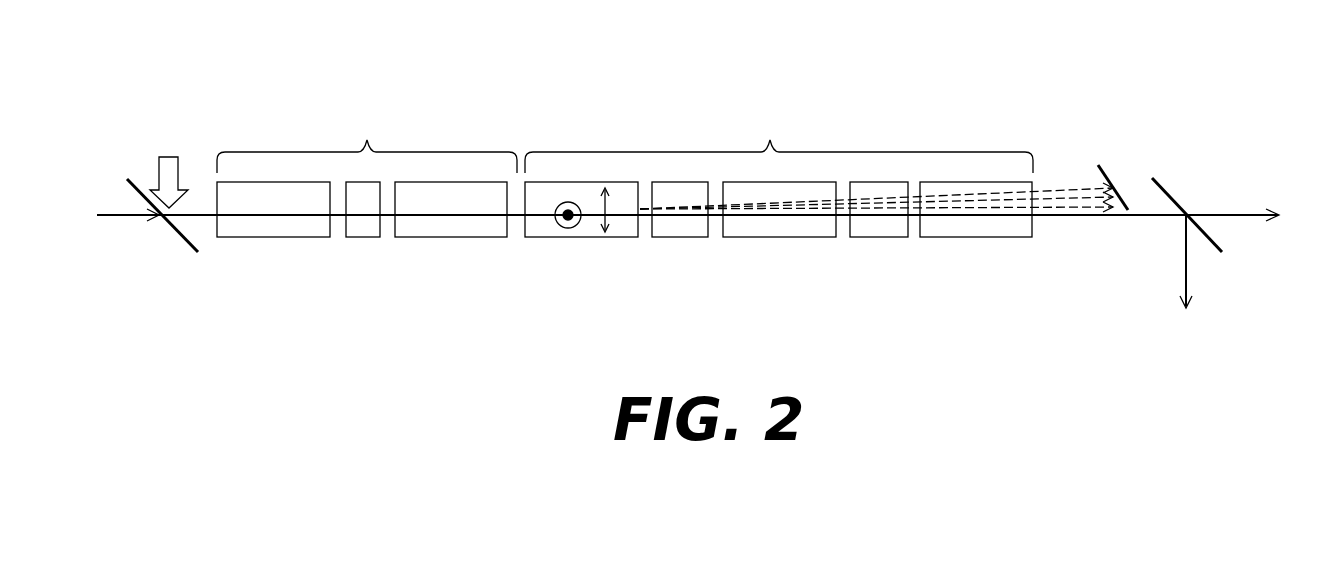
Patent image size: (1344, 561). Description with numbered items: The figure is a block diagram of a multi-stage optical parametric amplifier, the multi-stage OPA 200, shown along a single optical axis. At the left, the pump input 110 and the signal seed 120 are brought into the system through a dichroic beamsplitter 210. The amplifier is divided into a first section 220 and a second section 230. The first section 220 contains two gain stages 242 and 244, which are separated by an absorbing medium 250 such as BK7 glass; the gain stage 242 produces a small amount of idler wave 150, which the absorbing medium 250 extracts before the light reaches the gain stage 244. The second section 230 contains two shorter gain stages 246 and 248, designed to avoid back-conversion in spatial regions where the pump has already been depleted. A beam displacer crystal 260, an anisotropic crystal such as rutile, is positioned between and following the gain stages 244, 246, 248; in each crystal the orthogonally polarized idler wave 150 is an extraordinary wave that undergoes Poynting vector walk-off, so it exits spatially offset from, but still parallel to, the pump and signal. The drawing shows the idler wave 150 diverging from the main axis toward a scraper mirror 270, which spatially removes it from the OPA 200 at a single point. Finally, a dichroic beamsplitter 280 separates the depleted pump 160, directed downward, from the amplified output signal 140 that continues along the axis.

The multi-stage OPA 200 is at (798, 70).
The pump input 110 is at (170, 155).
The signal seed 120 is at (117, 215).
The dichroic beamsplitter 210 is at (187, 240).
The first section 220 is at (367, 139).
The second section 230 is at (779, 139).
The gain stage 242 is at (257, 240).
The absorbing medium 250 is at (368, 238).
The gain stage 244 is at (473, 238).
The beam displacer crystal 260 is at (578, 238).
The gain stage 246 is at (695, 238).
The gain stage 248 is at (897, 238).
The idler wave 150 is at (1082, 188).
The scraper mirror 270 is at (1107, 163).
The dichroic beamsplitter 280 is at (1163, 185).
The depleted pump 160 is at (1183, 273).
The amplified output signal 140 is at (1240, 218).